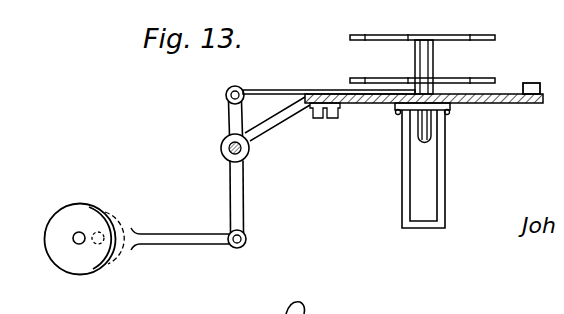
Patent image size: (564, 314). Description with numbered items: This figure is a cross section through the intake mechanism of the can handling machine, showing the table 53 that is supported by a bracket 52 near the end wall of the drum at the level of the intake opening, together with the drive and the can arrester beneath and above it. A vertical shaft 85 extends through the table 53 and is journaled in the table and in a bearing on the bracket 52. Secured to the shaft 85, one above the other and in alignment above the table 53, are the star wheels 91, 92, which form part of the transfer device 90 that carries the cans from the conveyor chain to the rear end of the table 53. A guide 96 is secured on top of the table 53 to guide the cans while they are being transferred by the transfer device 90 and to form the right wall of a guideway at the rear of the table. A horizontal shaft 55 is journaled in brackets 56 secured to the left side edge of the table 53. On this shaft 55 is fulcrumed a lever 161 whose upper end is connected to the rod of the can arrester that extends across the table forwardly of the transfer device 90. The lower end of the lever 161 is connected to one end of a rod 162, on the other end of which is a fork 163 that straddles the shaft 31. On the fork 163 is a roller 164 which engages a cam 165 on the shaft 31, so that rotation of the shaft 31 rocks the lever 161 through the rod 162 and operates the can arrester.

The shaft 31 is at (74, 242).
The bracket 52 is at (420, 170).
The table 53 is at (518, 100).
The horizontal shaft 55 is at (243, 149).
The brackets 56 is at (297, 110).
The vertical shaft 85 is at (425, 67).
The transfer device 90 is at (417, 59).
The star wheel 91 is at (496, 78).
The star wheel 92 is at (496, 34).
The guide 96 is at (537, 84).
The lever 161 is at (236, 215).
The rod 162 is at (193, 239).
The fork 163 is at (125, 226).
The roller 164 is at (98, 231).
The cam 165 is at (85, 258).